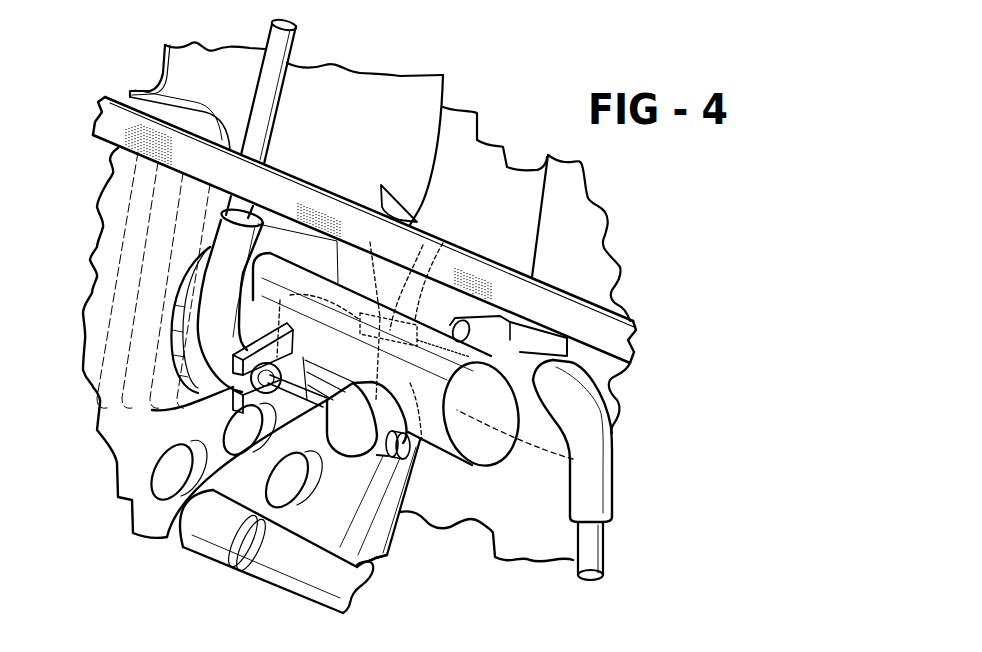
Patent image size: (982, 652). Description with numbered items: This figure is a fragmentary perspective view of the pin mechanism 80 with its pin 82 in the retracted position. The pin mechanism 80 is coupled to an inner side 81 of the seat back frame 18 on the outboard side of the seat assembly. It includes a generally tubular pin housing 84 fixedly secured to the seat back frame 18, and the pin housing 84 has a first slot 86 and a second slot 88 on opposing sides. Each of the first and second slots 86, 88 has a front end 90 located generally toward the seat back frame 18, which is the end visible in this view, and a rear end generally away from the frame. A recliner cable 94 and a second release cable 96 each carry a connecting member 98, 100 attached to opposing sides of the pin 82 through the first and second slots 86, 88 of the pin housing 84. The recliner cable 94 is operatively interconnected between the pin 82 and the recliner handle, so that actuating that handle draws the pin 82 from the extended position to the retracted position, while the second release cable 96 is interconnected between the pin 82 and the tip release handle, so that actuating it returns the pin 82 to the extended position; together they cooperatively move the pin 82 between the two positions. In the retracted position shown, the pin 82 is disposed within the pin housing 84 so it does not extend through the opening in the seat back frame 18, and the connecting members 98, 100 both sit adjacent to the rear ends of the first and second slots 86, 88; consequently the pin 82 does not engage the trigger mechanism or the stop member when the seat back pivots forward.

The seat back frame 18 is at (197, 62).
The pin mechanism 80 is at (110, 525).
The inner side 81 is at (374, 143).
The pin 82 is at (573, 459).
The pin housing 84 is at (480, 435).
The first slot 86 is at (437, 252).
The second slot 88 is at (327, 398).
The front end 90 is at (162, 580).
The recliner cable 94 is at (593, 550).
The second release cable 96 is at (280, 50).
The connecting member 98 is at (511, 342).
The connecting member 100 is at (362, 440).